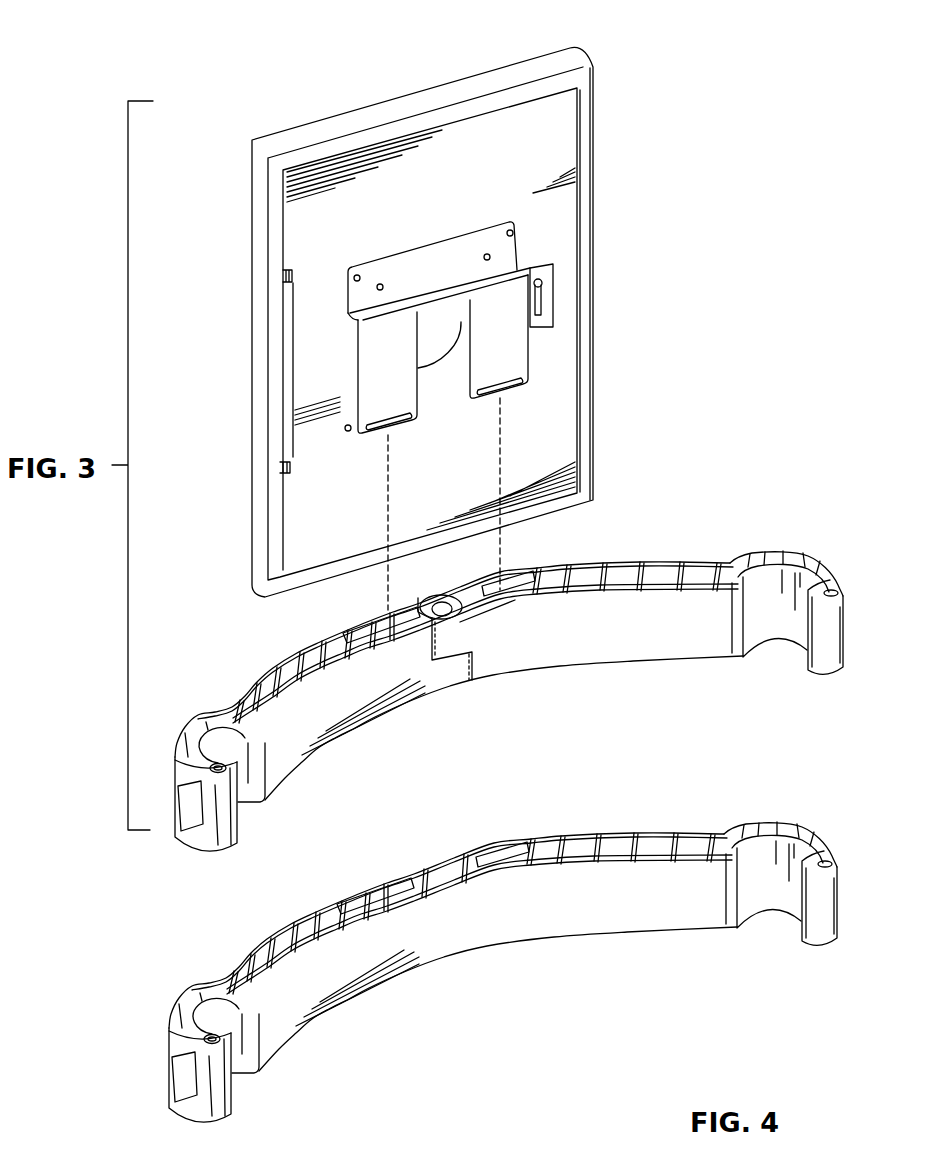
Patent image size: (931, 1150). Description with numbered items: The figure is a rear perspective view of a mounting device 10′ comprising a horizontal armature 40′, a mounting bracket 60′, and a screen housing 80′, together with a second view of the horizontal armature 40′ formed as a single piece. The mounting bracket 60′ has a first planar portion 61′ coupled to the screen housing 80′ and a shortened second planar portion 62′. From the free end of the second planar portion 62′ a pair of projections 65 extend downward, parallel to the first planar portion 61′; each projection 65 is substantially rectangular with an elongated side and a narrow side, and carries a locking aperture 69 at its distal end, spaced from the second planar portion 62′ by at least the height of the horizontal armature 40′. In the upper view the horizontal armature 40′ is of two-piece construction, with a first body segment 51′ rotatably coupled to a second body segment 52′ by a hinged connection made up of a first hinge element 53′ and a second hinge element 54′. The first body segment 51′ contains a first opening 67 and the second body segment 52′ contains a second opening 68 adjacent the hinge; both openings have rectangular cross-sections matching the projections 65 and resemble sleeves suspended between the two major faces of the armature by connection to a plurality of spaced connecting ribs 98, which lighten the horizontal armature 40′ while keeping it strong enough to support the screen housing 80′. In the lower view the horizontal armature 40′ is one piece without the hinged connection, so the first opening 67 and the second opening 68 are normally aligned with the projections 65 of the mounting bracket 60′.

In FIG. 3, the mounting device 10′ is at (628, 81).
In FIG. 3, the screen housing 80′ is at (250, 162).
In FIG. 3, the mounting bracket 60′ is at (342, 315).
In FIG. 3, the first planar portion 61′ is at (390, 268).
In FIG. 3, the second planar portion 62′ is at (517, 270).
In FIG. 3, the projections 65 is at (372, 362).
In FIG. 3, the locking aperture 69 is at (400, 416).
In FIG. 3, the horizontal armature 40′ is at (581, 666).
In FIG. 4, the horizontal armature 40′ is at (503, 963).
In FIG. 3, the first body segment 51′ is at (627, 562).
In FIG. 3, the second body segment 52′ is at (262, 675).
In FIG. 3, the first hinge element 53′ is at (460, 616).
In FIG. 3, the second hinge element 54′ is at (447, 683).
In FIG. 3, the first opening 67 is at (513, 586).
In FIG. 4, the first opening 67 is at (506, 835).
In FIG. 3, the second opening 68 is at (362, 630).
In FIG. 4, the second opening 68 is at (367, 884).
In FIG. 3, the connecting ribs 98 is at (720, 565).